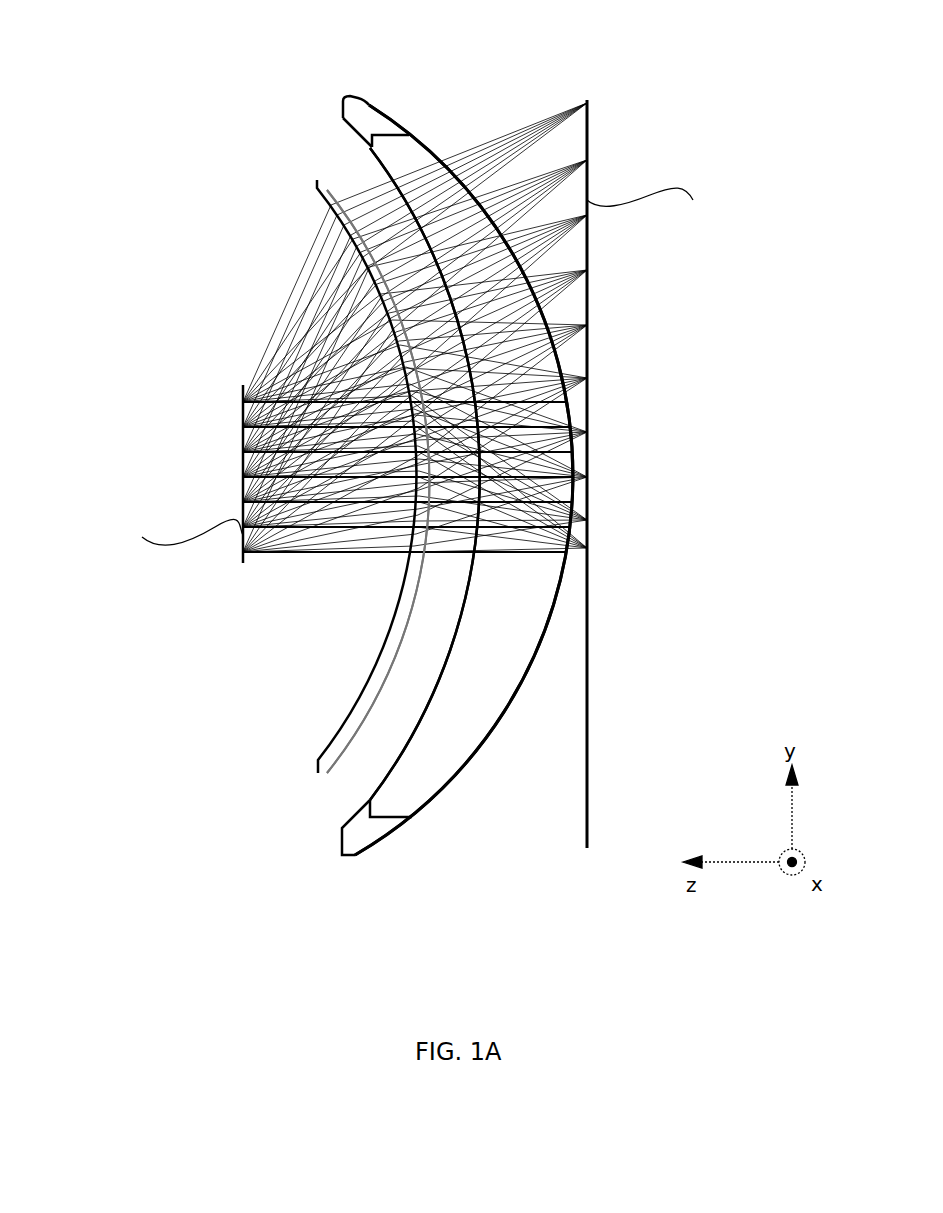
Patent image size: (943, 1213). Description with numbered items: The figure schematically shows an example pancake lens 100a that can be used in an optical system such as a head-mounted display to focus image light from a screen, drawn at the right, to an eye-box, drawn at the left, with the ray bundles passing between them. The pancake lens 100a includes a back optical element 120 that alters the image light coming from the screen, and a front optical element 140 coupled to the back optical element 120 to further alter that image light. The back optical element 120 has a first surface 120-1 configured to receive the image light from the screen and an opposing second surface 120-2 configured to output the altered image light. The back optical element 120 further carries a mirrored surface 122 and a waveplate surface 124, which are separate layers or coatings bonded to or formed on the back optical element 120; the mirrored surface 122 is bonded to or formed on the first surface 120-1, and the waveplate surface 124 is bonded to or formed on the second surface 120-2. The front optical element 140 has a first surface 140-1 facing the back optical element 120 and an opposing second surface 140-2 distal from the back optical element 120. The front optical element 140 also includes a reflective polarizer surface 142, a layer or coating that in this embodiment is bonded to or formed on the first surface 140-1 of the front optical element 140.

The pancake lens 100a is at (378, 54).
The back optical element 120 is at (535, 539).
The first surface 120-1 is at (541, 640).
The second surface 120-2 is at (445, 683).
The mirrored surface 122 is at (530, 287).
The waveplate surface 124 is at (427, 703).
The front optical element 140 is at (298, 581).
The first surface 140-1 is at (383, 683).
The second surface 140-2 is at (345, 723).
The reflective polarizer surface 142 is at (410, 624).